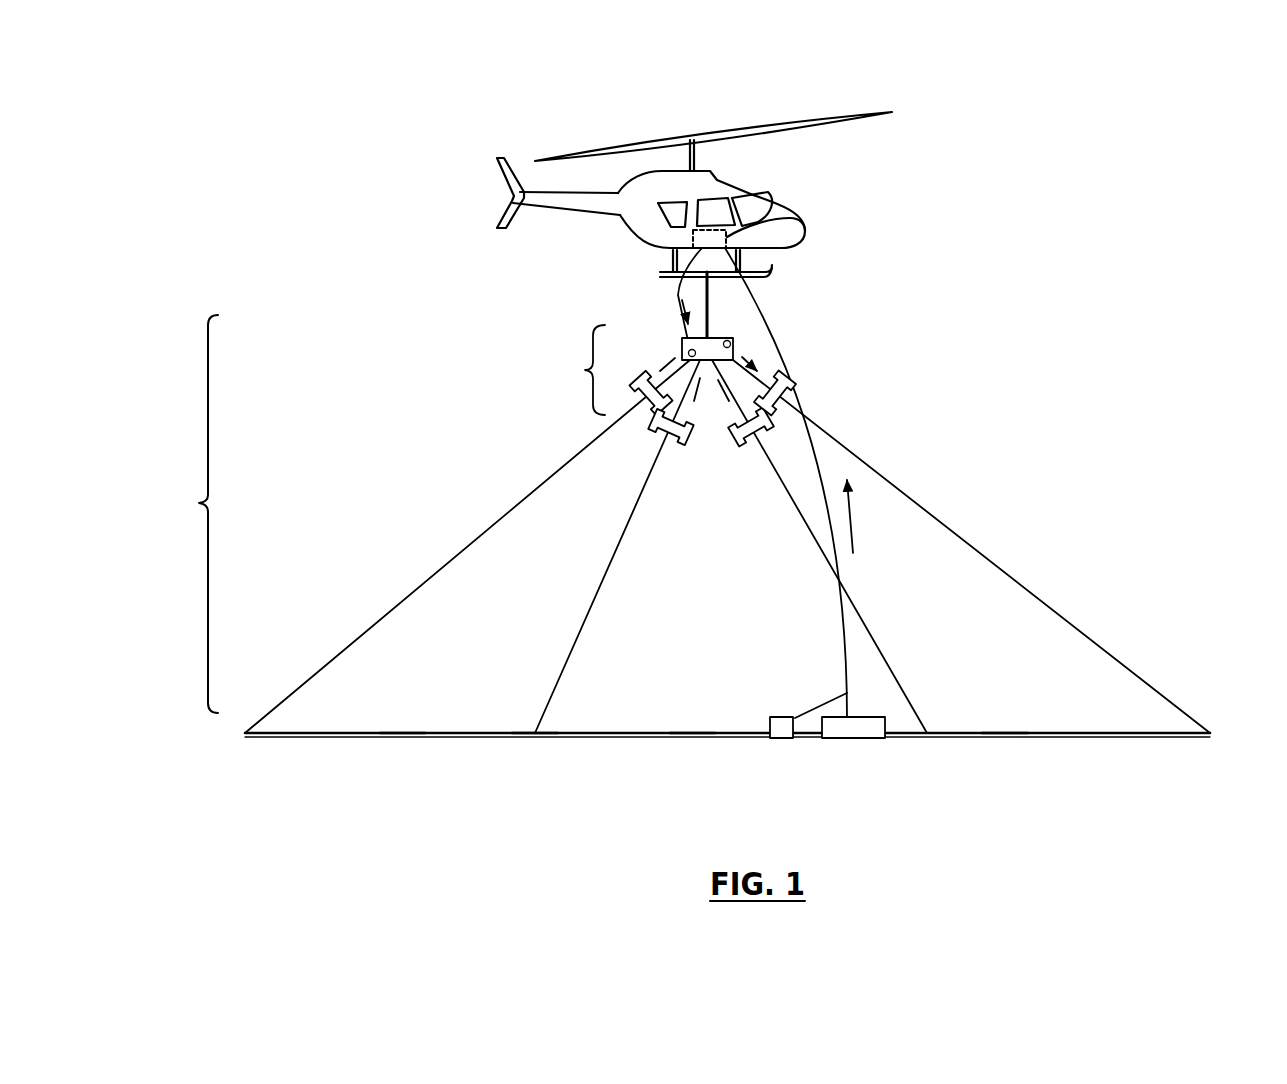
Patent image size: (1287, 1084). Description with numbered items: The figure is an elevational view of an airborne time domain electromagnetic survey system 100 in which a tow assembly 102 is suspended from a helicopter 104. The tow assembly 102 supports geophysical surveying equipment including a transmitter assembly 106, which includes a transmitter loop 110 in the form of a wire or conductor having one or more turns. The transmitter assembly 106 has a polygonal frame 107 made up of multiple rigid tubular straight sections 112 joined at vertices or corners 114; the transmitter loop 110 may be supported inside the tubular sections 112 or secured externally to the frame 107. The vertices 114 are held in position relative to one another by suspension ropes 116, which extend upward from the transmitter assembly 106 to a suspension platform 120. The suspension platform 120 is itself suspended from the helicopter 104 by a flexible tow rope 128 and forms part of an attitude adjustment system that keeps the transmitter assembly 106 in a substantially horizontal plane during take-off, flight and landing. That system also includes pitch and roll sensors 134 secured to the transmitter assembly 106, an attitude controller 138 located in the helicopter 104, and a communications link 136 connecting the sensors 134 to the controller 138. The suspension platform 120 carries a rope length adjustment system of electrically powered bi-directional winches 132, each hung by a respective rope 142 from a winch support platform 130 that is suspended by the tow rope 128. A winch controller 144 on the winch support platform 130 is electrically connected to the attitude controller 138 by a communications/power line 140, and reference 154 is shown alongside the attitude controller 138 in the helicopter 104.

The TDEM survey system 100 is at (1052, 304).
The tow assembly 102 is at (185, 514).
The helicopter 104 is at (553, 192).
The transmitter assembly 106 is at (1072, 737).
The polygonal frame 107 is at (1005, 737).
The transmitter loop 110 is at (1178, 737).
The tubular straight sections 112 is at (403, 737).
The vertices 114 is at (535, 737).
The suspension ropes 116 is at (473, 538).
The suspension platform 120 is at (682, 416).
The tow rope 128 is at (708, 313).
The winch support platform 130 is at (682, 356).
The winches 132 is at (637, 415).
The pitch and roll sensors 134 is at (835, 718).
The communications link 136 is at (860, 458).
The attitude controller 138 is at (783, 210).
The communications/power line 140 is at (678, 298).
The rope 142 is at (735, 355).
The winch controller 144 is at (733, 343).
The processor 154 is at (727, 237).